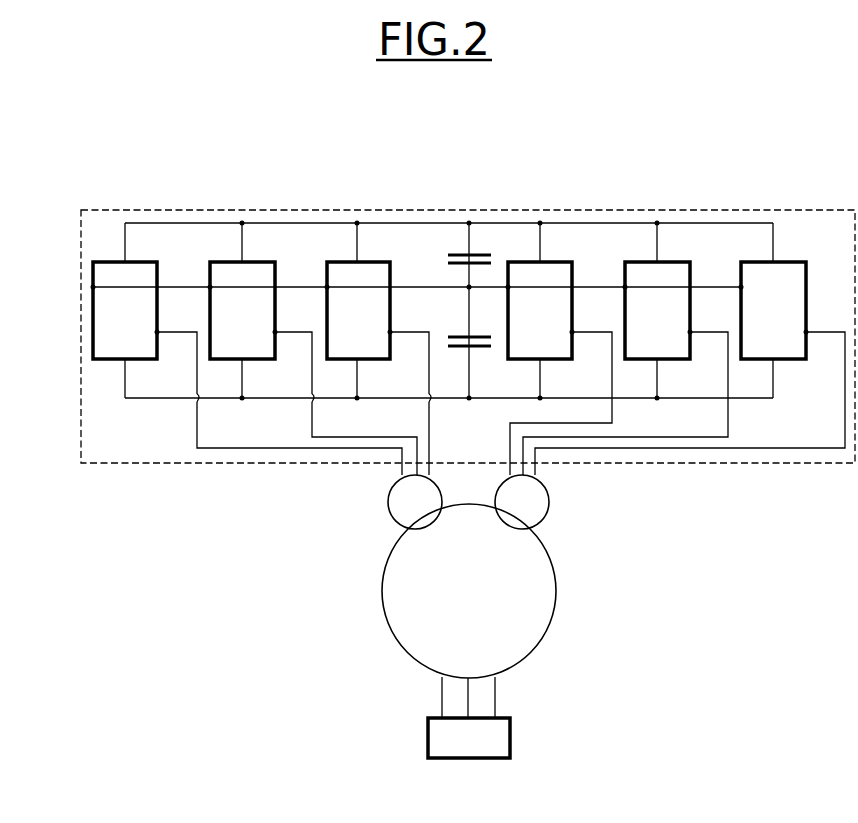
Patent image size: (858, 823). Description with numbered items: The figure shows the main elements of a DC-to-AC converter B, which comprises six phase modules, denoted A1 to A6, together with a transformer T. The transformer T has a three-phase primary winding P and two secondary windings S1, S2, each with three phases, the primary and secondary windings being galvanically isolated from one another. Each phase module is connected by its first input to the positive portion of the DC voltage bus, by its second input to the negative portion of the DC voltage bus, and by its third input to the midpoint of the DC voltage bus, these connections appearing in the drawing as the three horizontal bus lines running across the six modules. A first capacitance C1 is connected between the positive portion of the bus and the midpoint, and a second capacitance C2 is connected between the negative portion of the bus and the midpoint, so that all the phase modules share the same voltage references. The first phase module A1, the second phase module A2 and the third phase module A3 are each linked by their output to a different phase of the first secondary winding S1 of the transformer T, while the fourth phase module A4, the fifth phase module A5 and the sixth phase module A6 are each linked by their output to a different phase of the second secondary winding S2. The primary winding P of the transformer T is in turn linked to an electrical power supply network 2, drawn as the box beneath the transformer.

The electrical power supply network 2 is at (469, 717).
The first phase module A1 is at (247, 349).
The second phase module A2 is at (313, 349).
The third phase module A3 is at (379, 349).
The fourth phase module A4 is at (560, 349).
The fifth phase module A5 is at (625, 349).
The sixth phase module A6 is at (690, 349).
The DC-to-AC converter B is at (81, 335).
The first capacitance C1 is at (465, 248).
The second capacitance C2 is at (465, 332).
The first secondary winding S1 is at (415, 502).
The second secondary winding S2 is at (522, 502).
The transformer T is at (367, 598).
The primary winding P is at (468, 592).